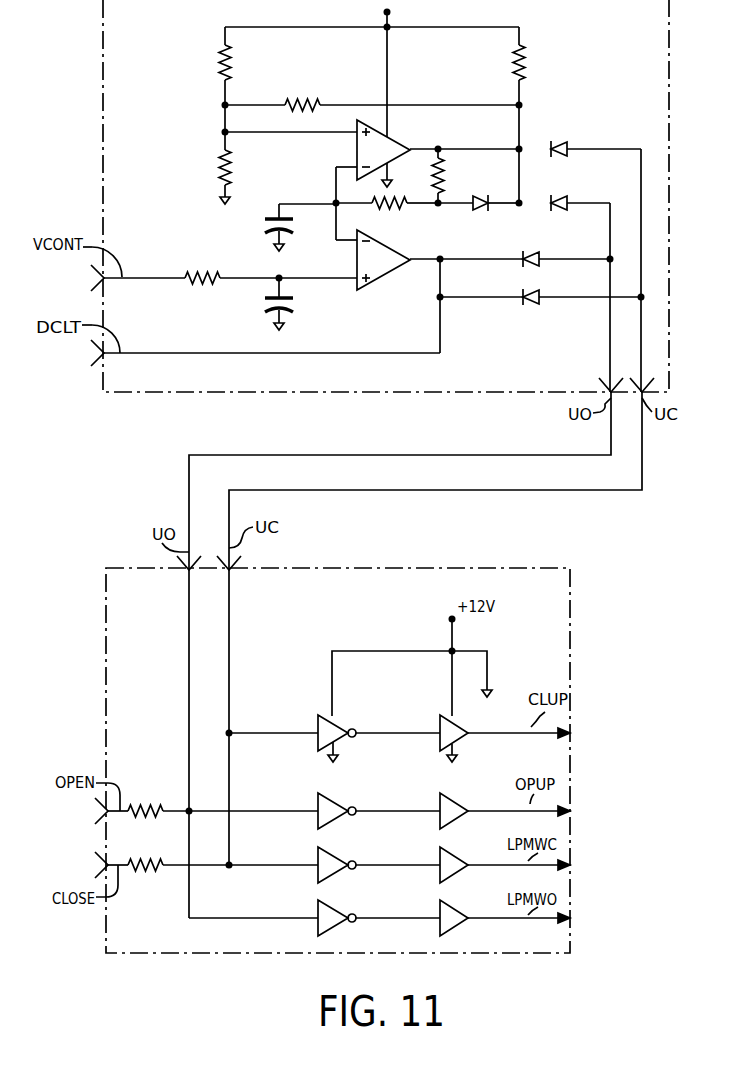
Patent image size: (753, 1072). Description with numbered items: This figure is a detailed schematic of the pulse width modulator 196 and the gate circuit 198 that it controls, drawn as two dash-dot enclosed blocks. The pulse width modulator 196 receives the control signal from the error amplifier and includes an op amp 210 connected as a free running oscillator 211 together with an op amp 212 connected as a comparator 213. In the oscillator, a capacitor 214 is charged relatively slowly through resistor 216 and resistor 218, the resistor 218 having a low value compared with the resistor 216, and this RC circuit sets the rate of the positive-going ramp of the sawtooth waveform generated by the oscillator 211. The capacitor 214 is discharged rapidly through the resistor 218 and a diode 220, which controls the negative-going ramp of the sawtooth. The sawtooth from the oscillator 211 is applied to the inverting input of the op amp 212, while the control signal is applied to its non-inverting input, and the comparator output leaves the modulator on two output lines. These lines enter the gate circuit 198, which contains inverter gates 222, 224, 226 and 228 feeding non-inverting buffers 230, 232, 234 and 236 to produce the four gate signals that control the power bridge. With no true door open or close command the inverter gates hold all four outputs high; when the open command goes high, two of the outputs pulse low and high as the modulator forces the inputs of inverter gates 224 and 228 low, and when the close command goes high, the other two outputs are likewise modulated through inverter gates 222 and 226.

The pulse width modulator 196 is at (103, 68).
The gate circuit 198 is at (548, 953).
The op amp 210 is at (392, 134).
The free running oscillator 211 is at (433, 86).
The op amp 212 is at (377, 285).
The comparator 213 is at (496, 288).
The capacitor 214 is at (265, 221).
The resistor 216 is at (444, 178).
The resistor 218 is at (385, 211).
The diode 220 is at (475, 211).
The inverter gate 222 is at (337, 716).
The inverter gate 224 is at (329, 794).
The inverter gate 226 is at (331, 852).
The inverter gate 228 is at (331, 905).
The non-inverting buffer 230 is at (467, 740).
The non-inverting buffer 232 is at (450, 794).
The non-inverting buffer 234 is at (474, 846).
The non-inverting buffer 236 is at (452, 905).